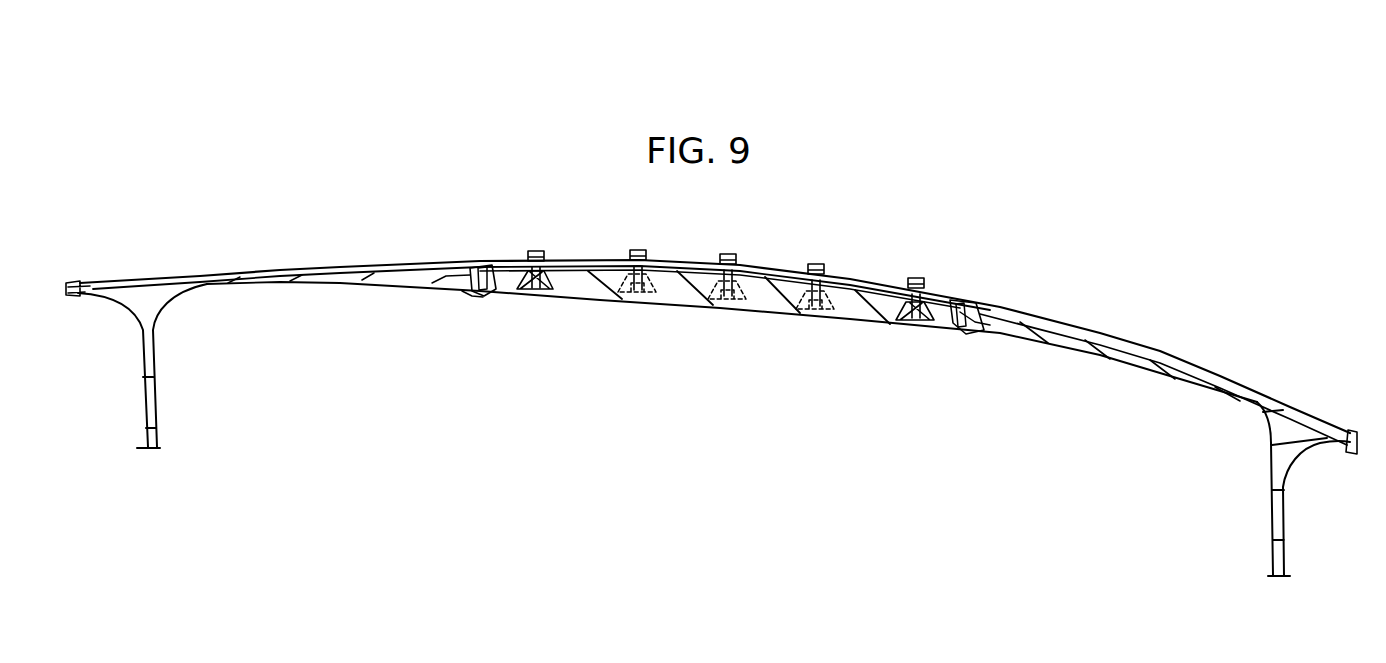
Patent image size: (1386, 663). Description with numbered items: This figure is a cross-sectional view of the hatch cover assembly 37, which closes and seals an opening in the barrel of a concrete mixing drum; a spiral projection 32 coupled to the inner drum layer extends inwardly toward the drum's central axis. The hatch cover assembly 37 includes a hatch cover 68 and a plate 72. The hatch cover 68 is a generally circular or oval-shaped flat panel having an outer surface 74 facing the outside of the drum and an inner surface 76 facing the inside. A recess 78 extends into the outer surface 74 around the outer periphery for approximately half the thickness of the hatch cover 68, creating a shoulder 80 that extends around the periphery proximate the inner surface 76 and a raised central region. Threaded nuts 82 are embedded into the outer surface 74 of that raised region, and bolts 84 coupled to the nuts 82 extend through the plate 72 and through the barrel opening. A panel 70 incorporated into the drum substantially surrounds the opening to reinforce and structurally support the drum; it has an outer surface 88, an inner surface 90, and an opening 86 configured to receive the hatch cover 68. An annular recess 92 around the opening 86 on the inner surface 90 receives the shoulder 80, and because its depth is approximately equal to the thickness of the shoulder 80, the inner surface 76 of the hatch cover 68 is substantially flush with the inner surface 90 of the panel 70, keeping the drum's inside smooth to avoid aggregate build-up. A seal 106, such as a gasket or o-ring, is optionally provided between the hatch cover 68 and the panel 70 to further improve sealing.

The hatch cover assembly 37 is at (912, 176).
The projection 32 is at (157, 378).
The hatch cover 68 is at (686, 306).
The panel 70 is at (395, 283).
The plate 72 is at (505, 260).
The outer surface 74 is at (758, 276).
The inner surface 76 is at (770, 313).
The recess 78 is at (953, 318).
The shoulder 80 is at (490, 289).
The threaded nut 82 is at (612, 283).
The bolt 84 is at (538, 251).
The opening 86 is at (472, 305).
The outer surface 88 is at (423, 266).
The inner surface 90 is at (440, 286).
The annular recess 92 is at (967, 318).
The seal 106 is at (482, 293).